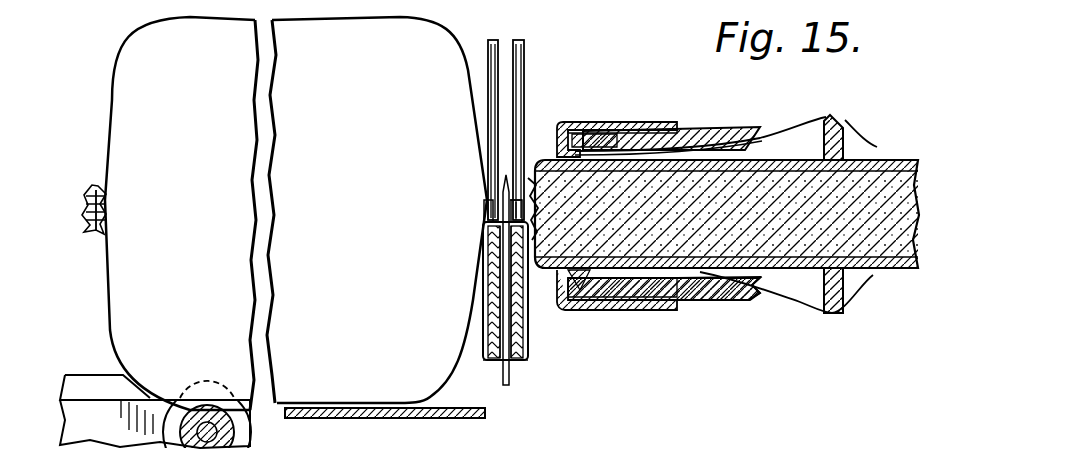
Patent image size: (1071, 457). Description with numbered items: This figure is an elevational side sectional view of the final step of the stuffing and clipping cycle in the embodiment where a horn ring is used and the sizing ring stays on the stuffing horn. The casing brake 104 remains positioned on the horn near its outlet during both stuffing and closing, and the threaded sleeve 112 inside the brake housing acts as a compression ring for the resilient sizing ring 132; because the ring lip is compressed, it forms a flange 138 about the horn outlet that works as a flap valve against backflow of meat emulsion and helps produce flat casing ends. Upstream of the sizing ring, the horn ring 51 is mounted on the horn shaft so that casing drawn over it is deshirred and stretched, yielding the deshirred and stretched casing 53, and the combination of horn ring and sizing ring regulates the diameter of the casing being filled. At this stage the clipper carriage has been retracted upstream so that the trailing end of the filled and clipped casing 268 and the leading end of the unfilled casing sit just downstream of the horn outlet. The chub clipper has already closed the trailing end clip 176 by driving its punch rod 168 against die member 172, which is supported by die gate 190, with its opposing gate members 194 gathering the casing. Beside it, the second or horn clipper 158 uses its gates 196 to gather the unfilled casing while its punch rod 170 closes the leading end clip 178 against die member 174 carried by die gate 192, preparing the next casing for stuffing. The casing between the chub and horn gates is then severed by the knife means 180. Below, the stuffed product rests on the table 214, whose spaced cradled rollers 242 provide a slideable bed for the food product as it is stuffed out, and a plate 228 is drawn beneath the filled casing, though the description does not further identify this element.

The filled and clipped casing 268 is at (288, 96).
The leading end clip 178 is at (106, 206).
The table 214 is at (50, 400).
The cradled rollers 242 is at (225, 398).
The bottom plate 228 is at (357, 418).
The punch rod 168 is at (492, 44).
The punch rod 170 is at (527, 44).
The knife means 180 is at (507, 386).
The die member 172 is at (487, 232).
The die member 174 is at (487, 250).
The gate members 194 is at (500, 278).
The die gate 190 is at (500, 300).
The gate members 196 is at (528, 330).
The die gate 192 is at (528, 352).
The trailing end clip 176 is at (483, 200).
The second clipper 158 is at (525, 365).
The flange 138 is at (560, 152).
The sizing ring 132 is at (578, 130).
The sleeve 112 is at (748, 130).
The casing brake 104 is at (712, 126).
The horn ring 51 is at (862, 140).
The deshirred and stretched casing 53 is at (797, 302).